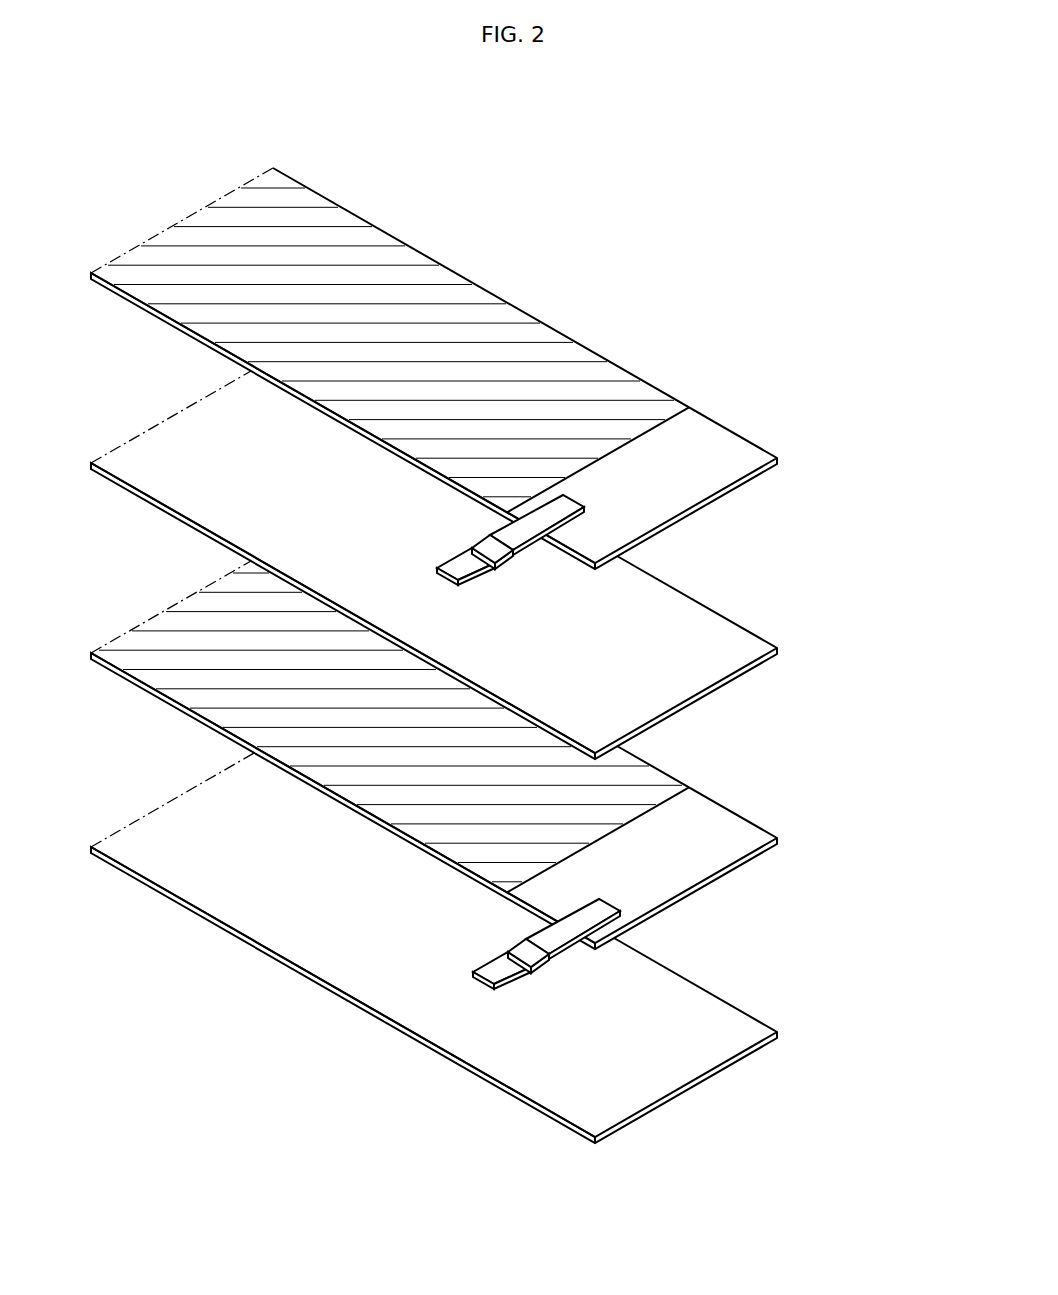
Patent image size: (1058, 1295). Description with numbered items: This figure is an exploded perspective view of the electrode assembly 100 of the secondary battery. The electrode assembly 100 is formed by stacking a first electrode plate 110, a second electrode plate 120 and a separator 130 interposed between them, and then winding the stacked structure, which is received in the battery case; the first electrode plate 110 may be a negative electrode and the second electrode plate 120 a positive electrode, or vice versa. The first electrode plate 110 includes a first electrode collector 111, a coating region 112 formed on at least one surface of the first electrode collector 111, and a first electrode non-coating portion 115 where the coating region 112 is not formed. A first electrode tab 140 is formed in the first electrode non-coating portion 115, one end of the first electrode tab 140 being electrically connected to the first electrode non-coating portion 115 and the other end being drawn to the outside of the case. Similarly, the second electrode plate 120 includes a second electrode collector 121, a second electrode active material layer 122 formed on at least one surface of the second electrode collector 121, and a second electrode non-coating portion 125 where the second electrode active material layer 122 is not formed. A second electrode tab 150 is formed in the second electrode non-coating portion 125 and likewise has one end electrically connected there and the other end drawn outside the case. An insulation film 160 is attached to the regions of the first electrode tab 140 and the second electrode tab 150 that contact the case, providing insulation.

The electrode assembly 100 is at (475, 654).
The first electrode plate 110 is at (475, 355).
The first electrode collector 111 is at (751, 481).
The coating region 112 is at (605, 390).
The first electrode non-coating portion 115 is at (720, 443).
The second electrode plate 120 is at (475, 750).
The second electrode collector 121 is at (753, 862).
The second electrode active material layer 122 is at (643, 793).
The second electrode non-coating portion 125 is at (733, 833).
The separator 130 is at (143, 409).
The first electrode tab 140 is at (461, 565).
The second electrode tab 150 is at (487, 972).
The insulation film 160 is at (530, 955).